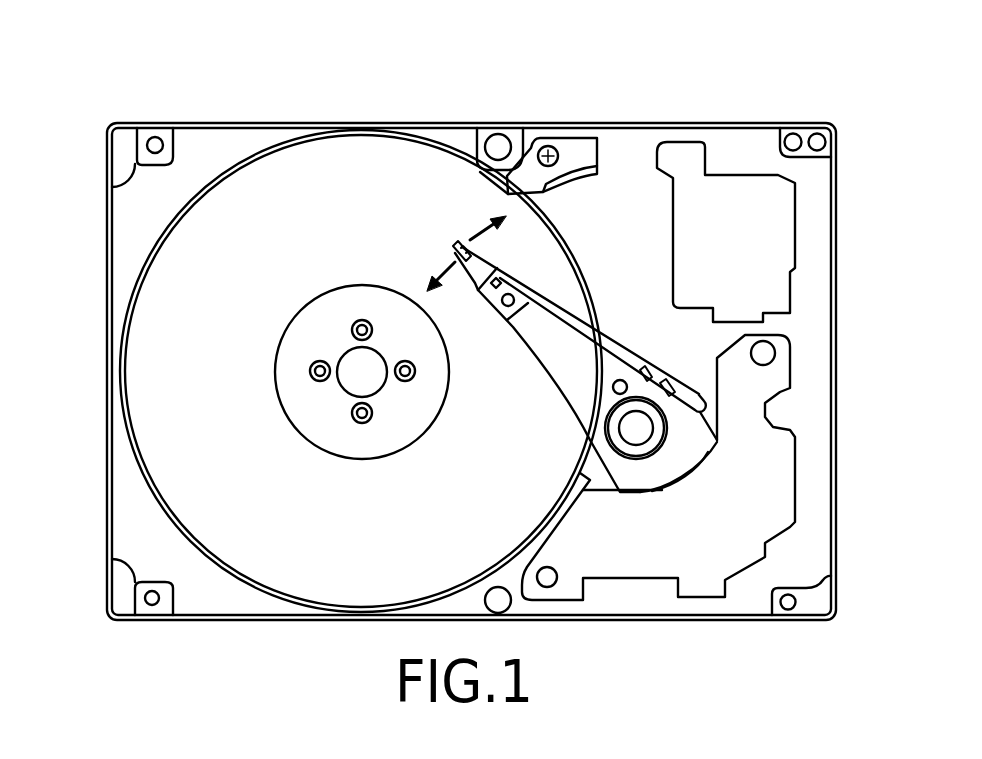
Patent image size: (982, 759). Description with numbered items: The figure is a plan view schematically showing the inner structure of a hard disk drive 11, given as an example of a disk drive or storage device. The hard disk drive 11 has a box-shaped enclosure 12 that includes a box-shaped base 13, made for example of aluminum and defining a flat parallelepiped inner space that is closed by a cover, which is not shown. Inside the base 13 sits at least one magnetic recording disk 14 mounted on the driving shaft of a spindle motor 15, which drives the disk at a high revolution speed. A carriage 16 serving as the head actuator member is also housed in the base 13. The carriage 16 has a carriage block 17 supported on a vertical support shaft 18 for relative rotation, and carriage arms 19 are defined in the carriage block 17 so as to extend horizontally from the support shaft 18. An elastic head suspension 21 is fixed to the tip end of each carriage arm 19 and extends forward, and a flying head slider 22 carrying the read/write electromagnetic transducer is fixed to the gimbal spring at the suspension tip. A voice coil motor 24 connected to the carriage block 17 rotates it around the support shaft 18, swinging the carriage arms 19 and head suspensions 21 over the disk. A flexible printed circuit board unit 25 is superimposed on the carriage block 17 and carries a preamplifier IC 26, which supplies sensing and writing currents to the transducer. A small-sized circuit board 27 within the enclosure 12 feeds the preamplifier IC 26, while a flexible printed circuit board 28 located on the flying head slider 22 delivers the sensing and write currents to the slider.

The hard disk drive 11 is at (265, 104).
The enclosure 12 is at (642, 124).
The base 13 is at (107, 211).
The magnetic recording disk 14 is at (138, 288).
The spindle motor 15 is at (346, 390).
The carriage 16 is at (555, 404).
The carriage block 17 is at (597, 458).
The support shaft 18 is at (676, 466).
The carriage arm 19 is at (535, 356).
The head suspension 21 is at (479, 285).
The flying head slider 22 is at (455, 250).
The voice coil motor 24 is at (661, 508).
The flexible printed circuit board unit 25 is at (653, 359).
The preamplifier IC 26 is at (669, 392).
The circuit board 27 is at (673, 240).
The flexible printed circuit board 28 is at (568, 322).